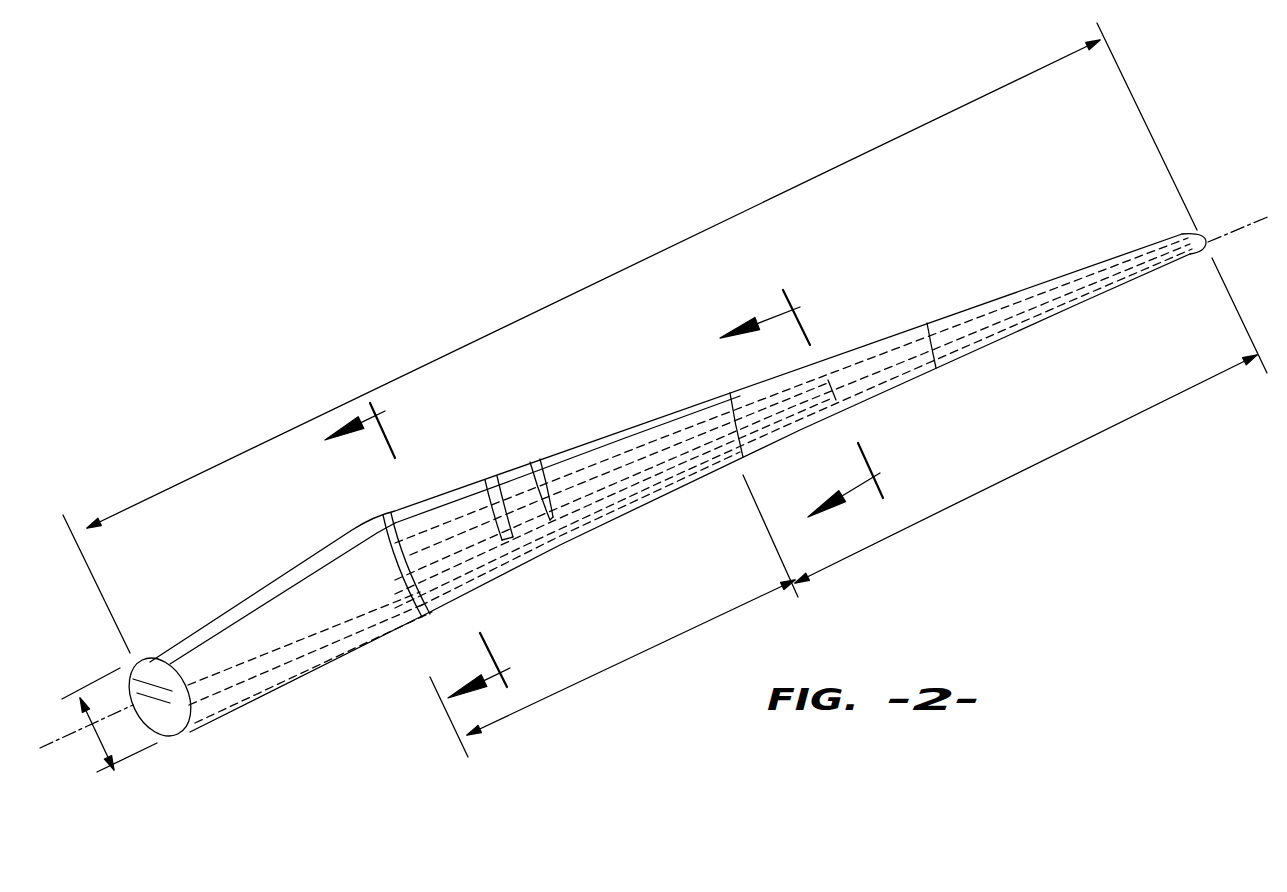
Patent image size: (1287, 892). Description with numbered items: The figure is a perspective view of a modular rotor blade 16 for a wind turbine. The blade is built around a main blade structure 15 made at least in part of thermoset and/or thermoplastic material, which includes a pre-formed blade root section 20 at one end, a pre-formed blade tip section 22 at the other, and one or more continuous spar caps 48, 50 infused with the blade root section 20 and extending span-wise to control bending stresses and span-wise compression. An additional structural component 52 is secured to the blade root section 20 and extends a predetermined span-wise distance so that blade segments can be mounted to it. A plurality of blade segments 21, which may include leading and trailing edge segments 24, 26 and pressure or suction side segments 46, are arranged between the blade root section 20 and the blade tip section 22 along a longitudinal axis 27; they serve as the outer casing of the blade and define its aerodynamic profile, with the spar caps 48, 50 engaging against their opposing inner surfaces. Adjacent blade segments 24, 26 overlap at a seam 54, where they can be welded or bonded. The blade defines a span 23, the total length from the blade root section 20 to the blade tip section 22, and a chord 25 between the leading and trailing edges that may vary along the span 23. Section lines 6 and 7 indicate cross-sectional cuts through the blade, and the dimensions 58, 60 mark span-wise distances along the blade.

The section line 6- 6 is at (417, 550).
The section line 7- 7 is at (797, 422).
The main blade structure 15 is at (680, 422).
The rotor blade 16 is at (328, 303).
The blade root section 20 is at (170, 648).
The blade segment 21 is at (399, 512).
The blade tip section 22 is at (1075, 310).
The span 23 is at (605, 278).
The leading edge segment 24 is at (632, 513).
The chord 25 is at (122, 713).
The trailing edge segment 26 is at (452, 497).
The longitudinal axis 27 is at (130, 758).
The suction side segment 46 is at (883, 350).
The spar cap 48 is at (120, 693).
The spar cap 50 is at (237, 677).
The structural component 52 is at (592, 455).
The seam 54 is at (494, 478).
The first spanwise distance 58 is at (603, 672).
The second spanwise distance 60 is at (992, 488).